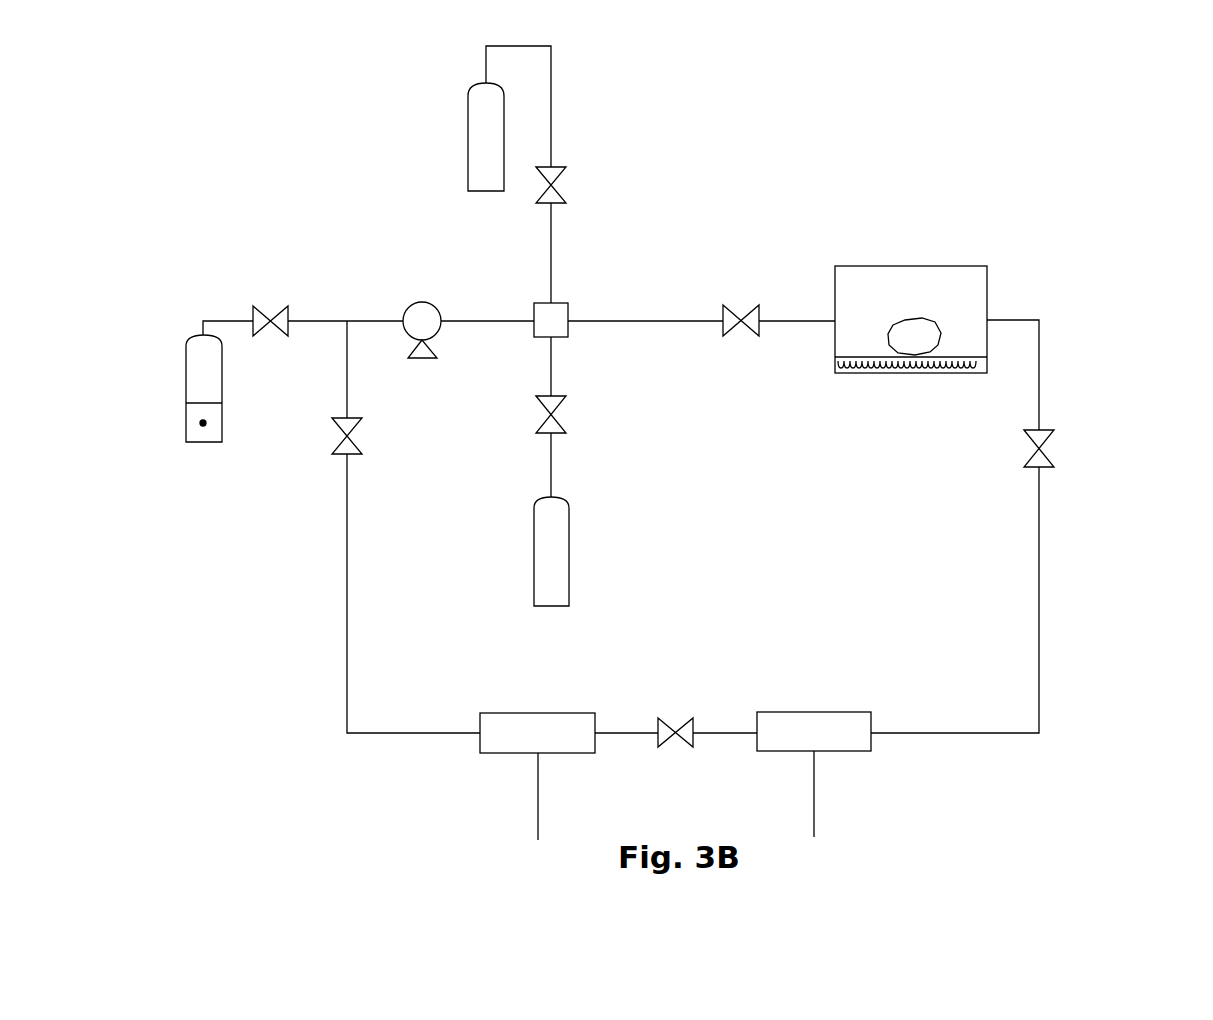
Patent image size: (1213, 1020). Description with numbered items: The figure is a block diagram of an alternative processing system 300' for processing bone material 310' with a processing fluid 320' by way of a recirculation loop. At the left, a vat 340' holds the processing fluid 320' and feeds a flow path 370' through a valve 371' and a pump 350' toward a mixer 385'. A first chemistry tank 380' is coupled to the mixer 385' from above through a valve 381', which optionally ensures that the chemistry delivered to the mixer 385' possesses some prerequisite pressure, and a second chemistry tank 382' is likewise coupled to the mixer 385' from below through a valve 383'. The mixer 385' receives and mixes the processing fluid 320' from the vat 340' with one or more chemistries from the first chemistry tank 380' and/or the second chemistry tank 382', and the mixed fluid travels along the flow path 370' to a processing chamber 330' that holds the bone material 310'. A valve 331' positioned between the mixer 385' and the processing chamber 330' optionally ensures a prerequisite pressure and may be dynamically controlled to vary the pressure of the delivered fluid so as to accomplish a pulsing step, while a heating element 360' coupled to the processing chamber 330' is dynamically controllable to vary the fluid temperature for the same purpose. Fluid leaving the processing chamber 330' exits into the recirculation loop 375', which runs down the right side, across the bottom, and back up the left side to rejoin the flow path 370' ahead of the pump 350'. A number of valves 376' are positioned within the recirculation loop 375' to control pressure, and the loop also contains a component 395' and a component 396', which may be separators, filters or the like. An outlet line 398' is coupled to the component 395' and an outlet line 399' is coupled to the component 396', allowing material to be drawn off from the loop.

The processing system 300' is at (1154, 101).
The bone material 310' is at (931, 287).
The processing fluid 320' is at (204, 454).
The processing chamber 330' is at (911, 294).
The valve 331' is at (752, 298).
The vat 340' is at (171, 388).
The pump 350' is at (427, 305).
The heating element 360' is at (911, 391).
The flow path 370' is at (519, 190).
The valve 371' is at (282, 299).
The recirculation loop 375' is at (699, 526).
The valves 376' is at (727, 582).
The first chemistry tank 380' is at (454, 137).
The valve 381' is at (584, 185).
The second chemistry tank 382' is at (590, 519).
The valve 383' is at (585, 385).
The mixer 385' is at (521, 341).
The component 395' is at (814, 706).
The component 396' is at (537, 707).
The outlet line 398' is at (853, 794).
The outlet line 399' is at (501, 796).